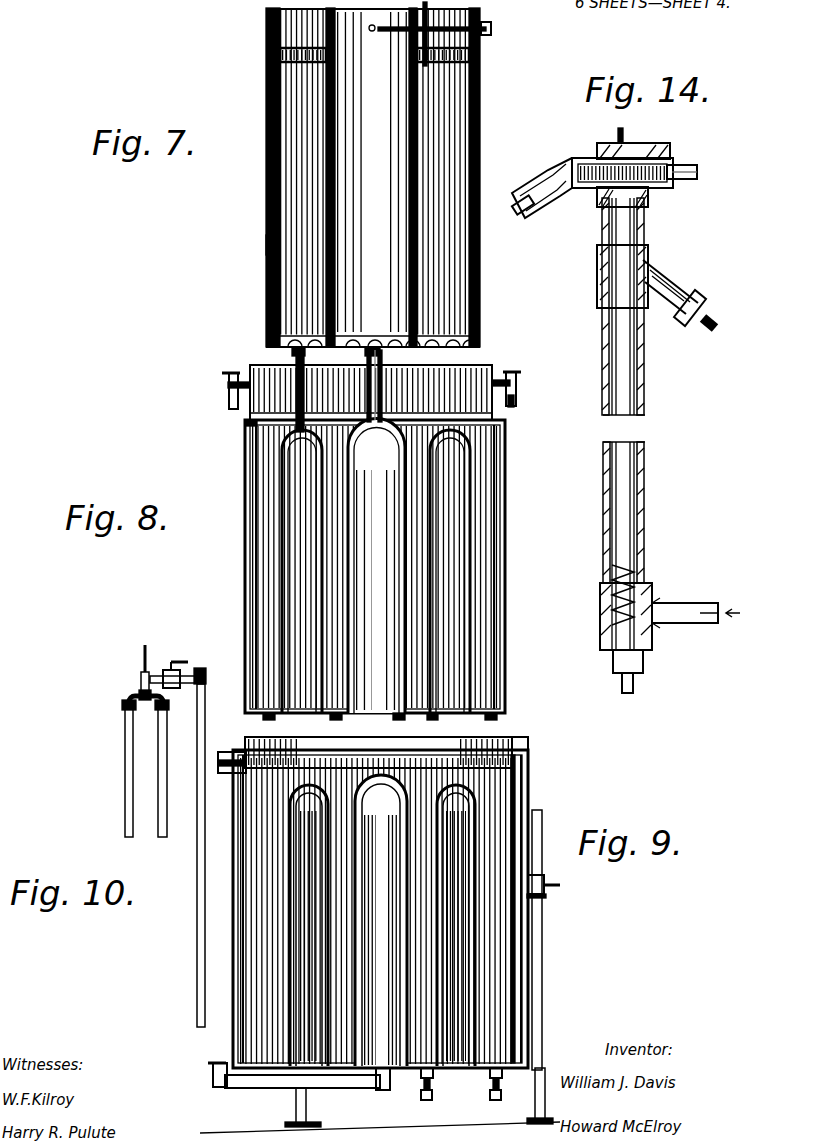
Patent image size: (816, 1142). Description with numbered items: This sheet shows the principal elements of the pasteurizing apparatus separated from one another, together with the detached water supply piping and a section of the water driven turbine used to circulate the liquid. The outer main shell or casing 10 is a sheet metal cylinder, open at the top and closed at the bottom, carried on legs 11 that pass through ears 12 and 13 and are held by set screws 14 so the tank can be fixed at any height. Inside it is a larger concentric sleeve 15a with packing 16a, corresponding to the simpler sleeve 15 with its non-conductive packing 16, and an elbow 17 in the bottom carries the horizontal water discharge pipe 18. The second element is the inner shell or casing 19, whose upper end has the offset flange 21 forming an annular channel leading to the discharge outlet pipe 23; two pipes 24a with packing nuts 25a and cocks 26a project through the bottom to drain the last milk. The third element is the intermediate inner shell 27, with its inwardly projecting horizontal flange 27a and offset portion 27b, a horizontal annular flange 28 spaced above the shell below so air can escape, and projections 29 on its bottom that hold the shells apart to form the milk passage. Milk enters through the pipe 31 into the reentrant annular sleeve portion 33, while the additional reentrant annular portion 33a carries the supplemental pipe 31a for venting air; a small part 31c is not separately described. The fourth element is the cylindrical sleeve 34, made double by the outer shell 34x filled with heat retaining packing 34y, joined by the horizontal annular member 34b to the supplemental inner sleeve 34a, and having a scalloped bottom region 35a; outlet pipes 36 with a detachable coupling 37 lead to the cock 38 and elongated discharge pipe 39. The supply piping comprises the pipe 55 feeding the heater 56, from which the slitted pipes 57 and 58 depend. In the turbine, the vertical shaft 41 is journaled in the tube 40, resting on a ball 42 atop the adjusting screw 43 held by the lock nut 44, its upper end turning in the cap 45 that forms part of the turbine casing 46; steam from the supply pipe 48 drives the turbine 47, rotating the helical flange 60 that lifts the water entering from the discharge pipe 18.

In FIG. 9, the main shell or casing 10 is at (526, 802).
In FIG. 9, the legs 11 is at (306, 1105).
In FIG. 9, the ears 12 is at (548, 1063).
In FIG. 9, the ears 13 is at (540, 898).
In FIG. 9, the set screws 14 is at (548, 885).
In FIG. 9, the sleeve 15 is at (382, 790).
In FIG. 9, the concentric sleeve 15a is at (322, 788).
In FIG. 9, the non-conductive packing 16 is at (398, 800).
In FIG. 9, the packing 16a is at (330, 800).
In FIG. 9, the elbow 17 is at (386, 1092).
In FIG. 9, the water discharge pipe 18 is at (343, 1090).
In FIG. 10, the water discharge pipe 18 is at (200, 922).
In FIG. 14, the water discharge pipe 18 is at (686, 606).
In FIG. 9, the inner shell or casing 19 is at (255, 925).
In FIG. 9, the offset flange 21 is at (386, 750).
In FIG. 9, the discharge outlet pipe 23 is at (230, 762).
In FIG. 9, the pipes 24a is at (432, 1084).
In FIG. 9, the packing nuts 25a is at (461, 1060).
In FIG. 9, the cocks 26a is at (434, 1098).
In FIG. 8, the inner shell 27 is at (246, 503).
In FIG. 8, the inwardly projecting horizontal flange 27a is at (248, 455).
In FIG. 8, the offset portion 27b is at (246, 426).
In FIG. 8, the horizontal annular flange 28 is at (505, 385).
In FIG. 8, the projections 29 is at (336, 721).
In FIG. 8, the pipe 31 is at (381, 406).
In FIG. 8, the supplemental pipe 31a is at (301, 409).
In FIG. 7, the hatched chamber 31c is at (432, 42).
In FIG. 8, the reentrant annular sleeve portion 33 is at (398, 424).
In FIG. 8, the reentrant annular portion 33a is at (462, 431).
In FIG. 7, the cylindrical sleeve 34 is at (266, 107).
In FIG. 7, the supplemental inner sleeve 34a is at (325, 193).
In FIG. 7, the horizontal annular member 34b is at (440, 70).
In FIG. 7, the outer shell 34x is at (266, 84).
In FIG. 7, the heat retaining packing 34y is at (267, 245).
In FIG. 7, the scalloped bottom 35a is at (380, 336).
In FIG. 7, the outlet pipes 36 is at (422, 36).
In FIG. 7, the detachable coupling 37 is at (491, 29).
In FIG. 8, the cock 38 is at (517, 386).
In FIG. 8, the elongated discharge pipe 39 is at (520, 400).
In FIG. 14, the tube 40 is at (645, 534).
In FIG. 14, the vertical shaft 41 is at (620, 145).
In FIG. 14, the ball 42 is at (652, 646).
In FIG. 14, the adjusting screw 43 is at (643, 668).
In FIG. 14, the lock nut 44 is at (633, 686).
In FIG. 14, the cap 45 is at (648, 194).
In FIG. 14, the turbine casing 46 is at (576, 160).
In FIG. 14, the turbine 47 is at (640, 160).
In FIG. 14, the steam supply pipe 48 is at (680, 165).
In FIG. 10, the pipe 55 is at (141, 685).
In FIG. 10, the heater 56 is at (140, 700).
In FIG. 10, the pipe 57 is at (160, 790).
In FIG. 10, the pipe 58 is at (125, 778).
In FIG. 14, the helical flange 60 is at (632, 580).